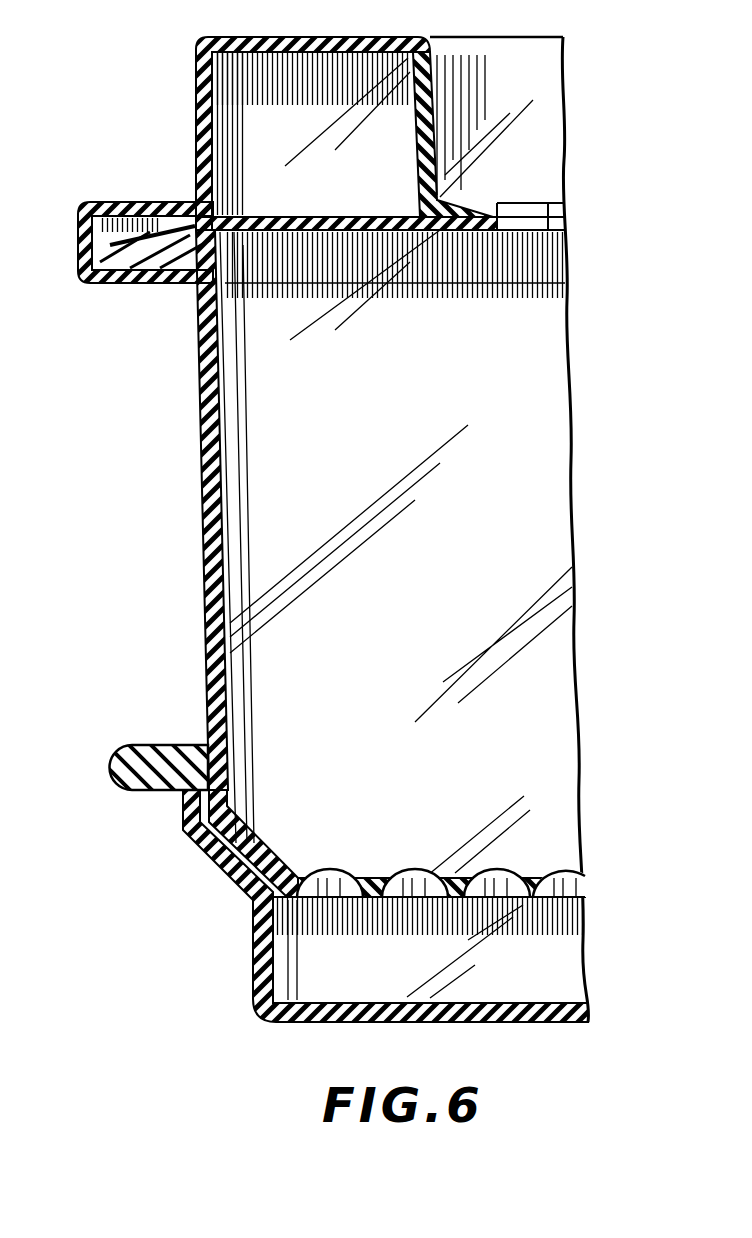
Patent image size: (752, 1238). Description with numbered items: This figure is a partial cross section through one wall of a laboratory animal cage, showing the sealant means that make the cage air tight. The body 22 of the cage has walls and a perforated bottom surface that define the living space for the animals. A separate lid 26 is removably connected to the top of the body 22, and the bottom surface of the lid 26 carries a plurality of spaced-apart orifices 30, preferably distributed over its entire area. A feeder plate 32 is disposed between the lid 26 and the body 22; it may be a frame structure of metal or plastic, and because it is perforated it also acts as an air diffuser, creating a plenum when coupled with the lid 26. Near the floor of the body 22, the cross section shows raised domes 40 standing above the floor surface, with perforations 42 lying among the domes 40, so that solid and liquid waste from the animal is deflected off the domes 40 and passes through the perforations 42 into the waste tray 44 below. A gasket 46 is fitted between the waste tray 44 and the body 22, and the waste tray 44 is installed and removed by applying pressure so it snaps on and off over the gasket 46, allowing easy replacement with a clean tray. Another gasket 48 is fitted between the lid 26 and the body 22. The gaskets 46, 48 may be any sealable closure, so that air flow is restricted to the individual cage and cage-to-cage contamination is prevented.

The body 22 is at (207, 523).
The lid 26 is at (200, 108).
The orifices 30 is at (518, 212).
The feeder plate 32 is at (572, 219).
The raised domes 40 is at (570, 877).
The perforations 42 is at (340, 884).
The waste tray 44 is at (263, 1000).
The gasket 46 is at (203, 742).
The gasket 48 is at (140, 284).